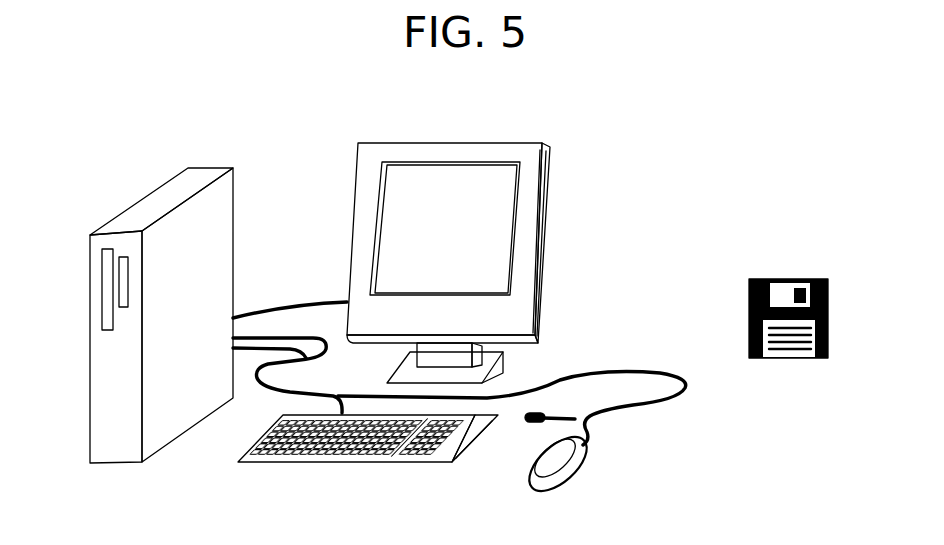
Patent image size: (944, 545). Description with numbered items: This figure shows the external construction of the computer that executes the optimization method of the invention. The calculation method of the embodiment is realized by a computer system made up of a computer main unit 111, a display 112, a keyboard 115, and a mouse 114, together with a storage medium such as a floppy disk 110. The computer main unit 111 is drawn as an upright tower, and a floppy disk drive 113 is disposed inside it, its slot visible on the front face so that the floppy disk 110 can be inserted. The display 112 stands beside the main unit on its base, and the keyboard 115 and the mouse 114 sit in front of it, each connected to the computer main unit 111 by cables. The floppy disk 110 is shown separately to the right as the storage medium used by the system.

The floppy disk 110 is at (830, 313).
The computer main unit 111 is at (148, 204).
The display 112 is at (533, 168).
The floppy disk drive 113 is at (120, 285).
The mouse 114 is at (582, 464).
The keyboard 115 is at (421, 455).